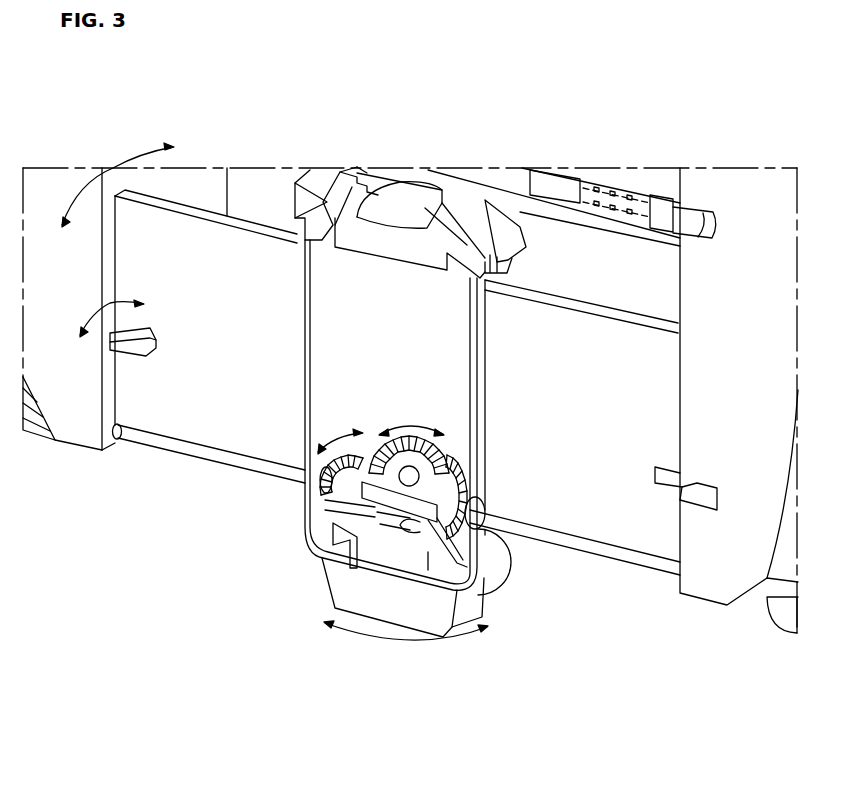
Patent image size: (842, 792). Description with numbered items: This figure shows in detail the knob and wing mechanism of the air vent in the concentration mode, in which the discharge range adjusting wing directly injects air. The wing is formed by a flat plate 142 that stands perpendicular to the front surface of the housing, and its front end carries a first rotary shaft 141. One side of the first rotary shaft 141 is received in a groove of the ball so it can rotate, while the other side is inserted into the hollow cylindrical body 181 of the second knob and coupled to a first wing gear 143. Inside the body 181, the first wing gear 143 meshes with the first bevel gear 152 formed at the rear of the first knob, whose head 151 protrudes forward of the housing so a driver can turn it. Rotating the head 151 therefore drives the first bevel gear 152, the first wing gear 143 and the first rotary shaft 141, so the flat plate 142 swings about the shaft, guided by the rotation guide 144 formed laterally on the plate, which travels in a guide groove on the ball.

The first rotary shaft 141 is at (248, 465).
The flat plate 142 is at (188, 417).
The first wing gear 143 is at (313, 547).
The rotation guide 144 is at (115, 440).
The head 151 is at (430, 617).
The first bevel gear 152 is at (418, 543).
The body 181 is at (493, 542).